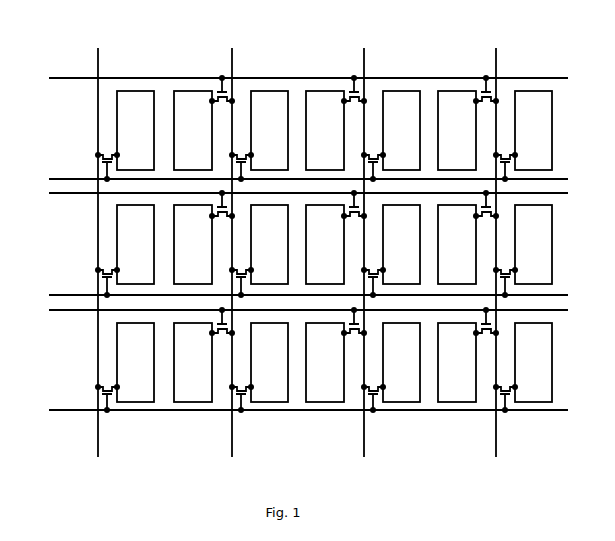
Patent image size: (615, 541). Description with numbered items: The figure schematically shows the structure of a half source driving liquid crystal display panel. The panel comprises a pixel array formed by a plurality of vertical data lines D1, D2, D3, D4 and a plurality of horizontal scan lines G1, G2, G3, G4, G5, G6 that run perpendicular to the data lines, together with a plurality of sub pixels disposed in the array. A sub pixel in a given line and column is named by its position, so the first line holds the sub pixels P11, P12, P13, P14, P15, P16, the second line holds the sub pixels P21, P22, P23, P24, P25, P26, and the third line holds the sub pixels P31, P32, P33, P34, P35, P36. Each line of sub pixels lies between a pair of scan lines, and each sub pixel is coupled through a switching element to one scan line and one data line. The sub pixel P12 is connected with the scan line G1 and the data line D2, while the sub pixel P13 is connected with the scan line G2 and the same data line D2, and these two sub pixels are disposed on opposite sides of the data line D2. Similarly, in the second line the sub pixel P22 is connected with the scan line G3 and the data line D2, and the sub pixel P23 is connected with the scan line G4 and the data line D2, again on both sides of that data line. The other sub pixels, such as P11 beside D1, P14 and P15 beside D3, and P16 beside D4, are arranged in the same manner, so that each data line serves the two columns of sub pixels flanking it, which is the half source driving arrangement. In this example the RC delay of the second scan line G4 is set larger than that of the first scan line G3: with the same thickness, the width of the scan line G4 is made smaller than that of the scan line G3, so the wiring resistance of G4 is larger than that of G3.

The data line D1 is at (102, 241).
The data line D2 is at (235, 241).
The data line D3 is at (367, 241).
The data line D4 is at (499, 241).
The scan line G1 is at (296, 78).
The scan line G2 is at (296, 179).
The first scan line G3 is at (296, 193).
The second scan line G4 is at (296, 295).
The scan line G5 is at (296, 310).
The scan line G6 is at (296, 410).
The sub pixel P11 is at (124, 136).
The sub pixel P12 is at (204, 122).
The sub pixel P13 is at (258, 136).
The sub pixel P14 is at (336, 122).
The sub pixel P15 is at (390, 136).
The sub pixel P16 is at (468, 122).
The sub pixel P21 is at (124, 251).
The sub pixel P22 is at (204, 237).
The sub pixel P23 is at (258, 251).
The sub pixel P24 is at (336, 237).
The sub pixel P25 is at (390, 251).
The sub pixel P26 is at (468, 237).
The sub pixel P31 is at (124, 368).
The sub pixel P32 is at (204, 354).
The sub pixel P33 is at (258, 368).
The sub pixel P34 is at (336, 354).
The sub pixel P35 is at (390, 368).
The sub pixel P36 is at (468, 354).